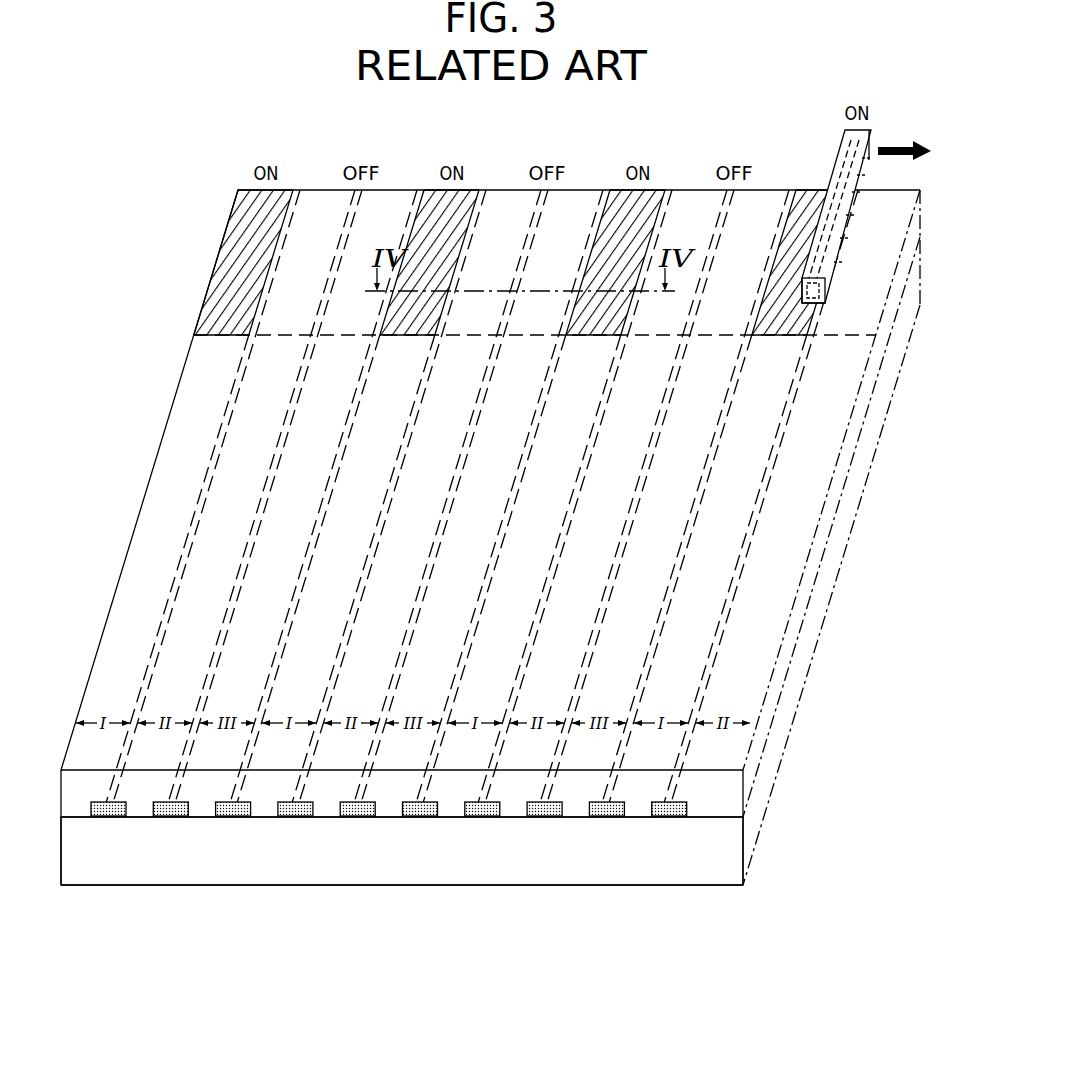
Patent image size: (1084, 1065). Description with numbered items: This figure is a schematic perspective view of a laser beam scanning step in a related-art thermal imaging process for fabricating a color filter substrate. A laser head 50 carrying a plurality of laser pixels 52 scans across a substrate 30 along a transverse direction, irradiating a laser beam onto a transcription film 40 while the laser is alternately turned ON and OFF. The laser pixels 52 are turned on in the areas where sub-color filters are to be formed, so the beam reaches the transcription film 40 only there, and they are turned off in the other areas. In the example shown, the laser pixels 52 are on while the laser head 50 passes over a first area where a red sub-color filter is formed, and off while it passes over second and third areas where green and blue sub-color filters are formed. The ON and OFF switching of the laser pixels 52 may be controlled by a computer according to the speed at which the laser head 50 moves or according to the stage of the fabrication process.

The substrate 30 is at (846, 520).
The transcription film 40 is at (846, 468).
The laser head 50 is at (852, 141).
The laser pixels 52 is at (860, 161).